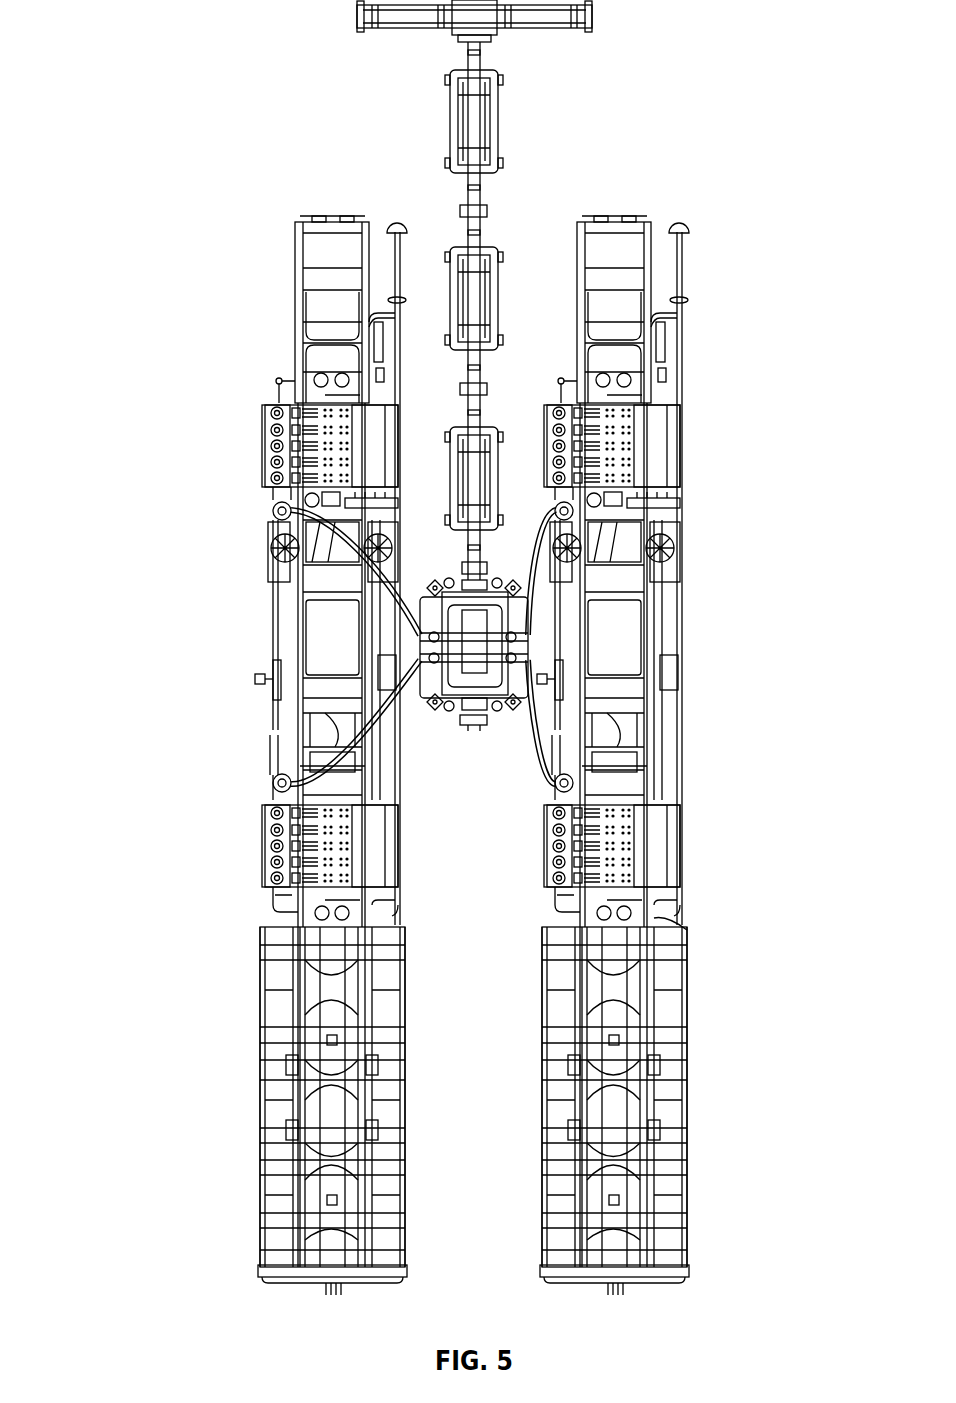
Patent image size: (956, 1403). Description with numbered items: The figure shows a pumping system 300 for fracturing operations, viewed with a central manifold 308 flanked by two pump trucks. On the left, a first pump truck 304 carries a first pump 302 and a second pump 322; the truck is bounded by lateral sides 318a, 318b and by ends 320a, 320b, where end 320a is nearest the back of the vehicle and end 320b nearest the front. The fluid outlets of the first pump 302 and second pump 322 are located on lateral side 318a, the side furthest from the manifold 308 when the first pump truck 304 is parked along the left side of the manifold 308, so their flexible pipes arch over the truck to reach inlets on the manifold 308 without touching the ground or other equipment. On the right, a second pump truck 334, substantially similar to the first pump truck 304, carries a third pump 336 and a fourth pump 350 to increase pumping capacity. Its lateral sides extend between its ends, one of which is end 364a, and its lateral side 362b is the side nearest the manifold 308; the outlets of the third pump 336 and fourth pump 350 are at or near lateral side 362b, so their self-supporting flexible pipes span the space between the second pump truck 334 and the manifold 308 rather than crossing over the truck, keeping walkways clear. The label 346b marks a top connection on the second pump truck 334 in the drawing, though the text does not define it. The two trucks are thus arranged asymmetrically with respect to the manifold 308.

The pumping system 300 is at (143, 58).
The manifold 308 is at (505, 115).
The end of first pump truck 320b is at (330, 212).
The top fluid connection of second pump unit 346b is at (623, 532).
The second pump 322 is at (280, 446).
The fourth pump 350 is at (678, 468).
The first pump 302 is at (280, 850).
The third pump 336 is at (678, 865).
The first pump truck 304 is at (218, 1133).
The second pump truck 334 is at (438, 1088).
The lateral side of first pump truck 318a is at (248, 998).
The lateral side of first pump truck 318b is at (428, 1183).
The end of first pump truck 320a is at (316, 1303).
The lateral side of second pump truck 362b is at (723, 941).
The end of second pump truck 364a is at (573, 1134).